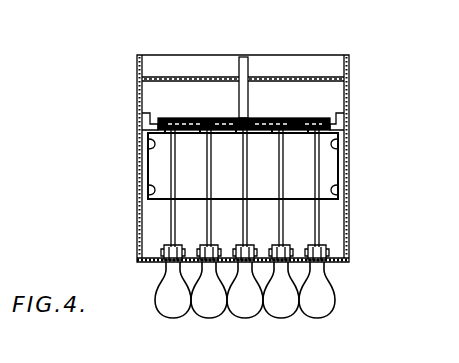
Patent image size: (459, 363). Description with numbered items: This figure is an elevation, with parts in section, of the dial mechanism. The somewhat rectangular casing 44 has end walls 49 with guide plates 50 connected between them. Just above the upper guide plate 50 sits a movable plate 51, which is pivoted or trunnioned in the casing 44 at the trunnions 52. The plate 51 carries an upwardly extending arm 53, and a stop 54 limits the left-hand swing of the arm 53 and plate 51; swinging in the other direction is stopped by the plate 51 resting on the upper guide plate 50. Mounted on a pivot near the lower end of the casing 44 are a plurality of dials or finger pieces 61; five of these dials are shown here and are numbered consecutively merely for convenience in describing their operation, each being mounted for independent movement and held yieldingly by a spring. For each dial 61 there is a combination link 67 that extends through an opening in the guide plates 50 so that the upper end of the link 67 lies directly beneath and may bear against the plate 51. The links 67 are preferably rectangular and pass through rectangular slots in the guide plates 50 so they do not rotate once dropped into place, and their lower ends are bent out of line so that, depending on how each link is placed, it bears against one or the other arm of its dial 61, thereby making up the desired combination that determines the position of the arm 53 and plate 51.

The casing 44 is at (312, 57).
The end walls 49 is at (140, 170).
The guide plates 50 is at (190, 133).
The movable plate 51 is at (216, 117).
The trunnion 52 is at (142, 118).
The arm 53 is at (247, 68).
The stop 54 is at (198, 77).
The dials 61 is at (313, 328).
The combination links 67 is at (324, 181).